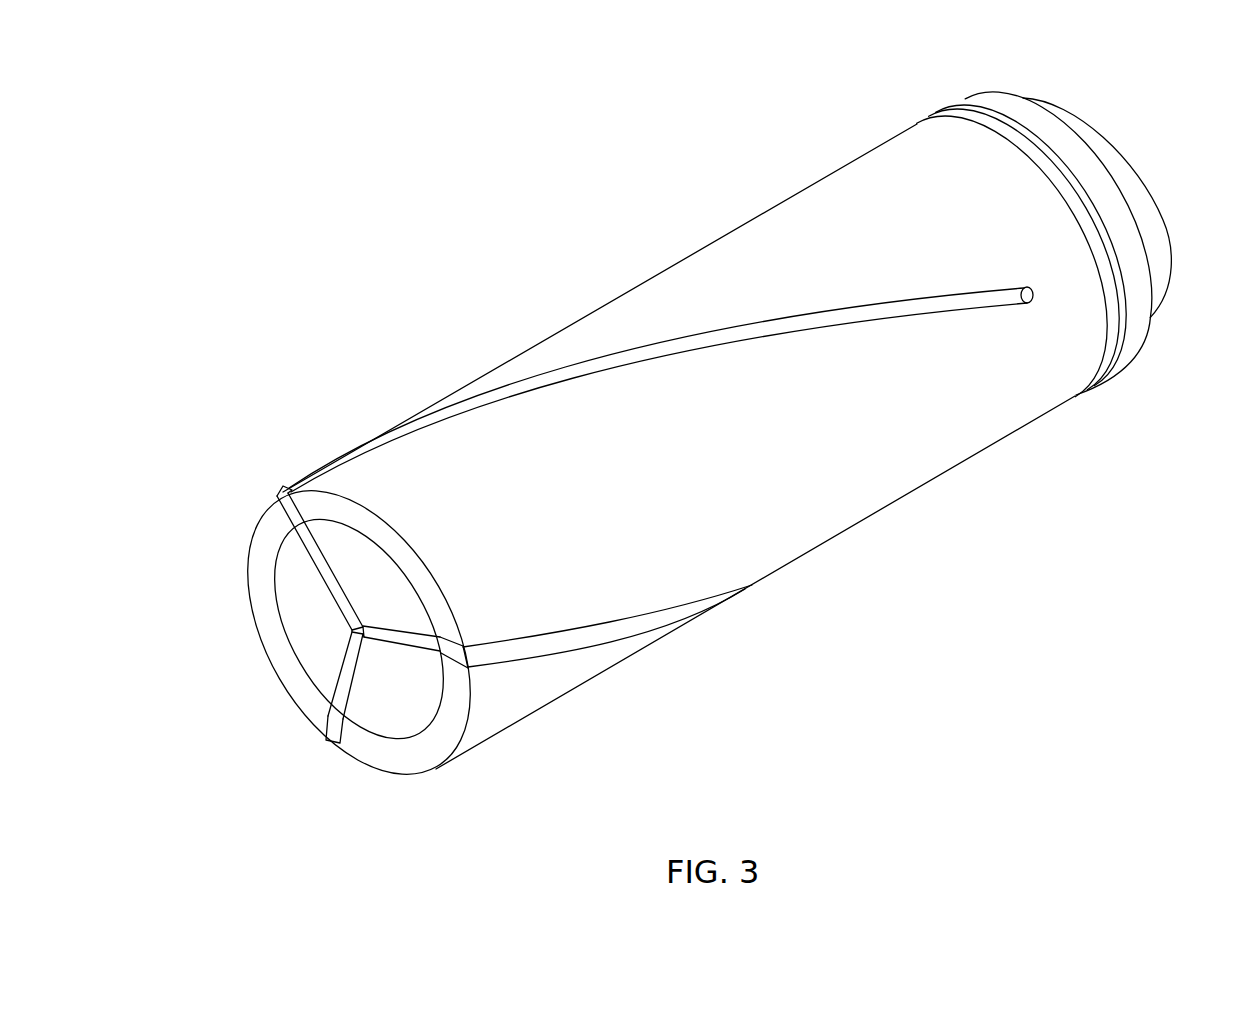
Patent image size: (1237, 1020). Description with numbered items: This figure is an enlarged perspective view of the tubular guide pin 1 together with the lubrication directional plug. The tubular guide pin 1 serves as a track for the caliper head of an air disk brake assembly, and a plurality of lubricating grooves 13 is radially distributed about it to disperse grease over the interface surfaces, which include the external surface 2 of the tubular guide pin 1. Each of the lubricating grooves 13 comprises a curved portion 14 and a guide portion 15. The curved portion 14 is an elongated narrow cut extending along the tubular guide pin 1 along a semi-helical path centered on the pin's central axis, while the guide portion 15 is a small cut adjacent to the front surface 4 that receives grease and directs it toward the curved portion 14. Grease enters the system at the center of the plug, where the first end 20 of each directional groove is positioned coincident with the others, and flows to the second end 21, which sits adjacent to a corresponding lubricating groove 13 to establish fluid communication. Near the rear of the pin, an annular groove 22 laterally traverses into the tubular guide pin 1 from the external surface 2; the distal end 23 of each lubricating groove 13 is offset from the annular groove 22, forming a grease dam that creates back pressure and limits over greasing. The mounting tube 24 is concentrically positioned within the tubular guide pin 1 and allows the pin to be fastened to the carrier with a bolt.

The tubular guide pin 1 is at (915, 652).
The external surface 2 is at (787, 228).
The front surface 4 is at (289, 669).
The lubricating grooves 13 is at (627, 357).
The curved portion 14 is at (781, 325).
The guide portion 15 is at (290, 515).
The first end 20 is at (364, 611).
The second end 21 is at (310, 527).
The annular groove 22 is at (998, 126).
The distal end 23 is at (1033, 302).
The mounting tube 24 is at (1127, 180).